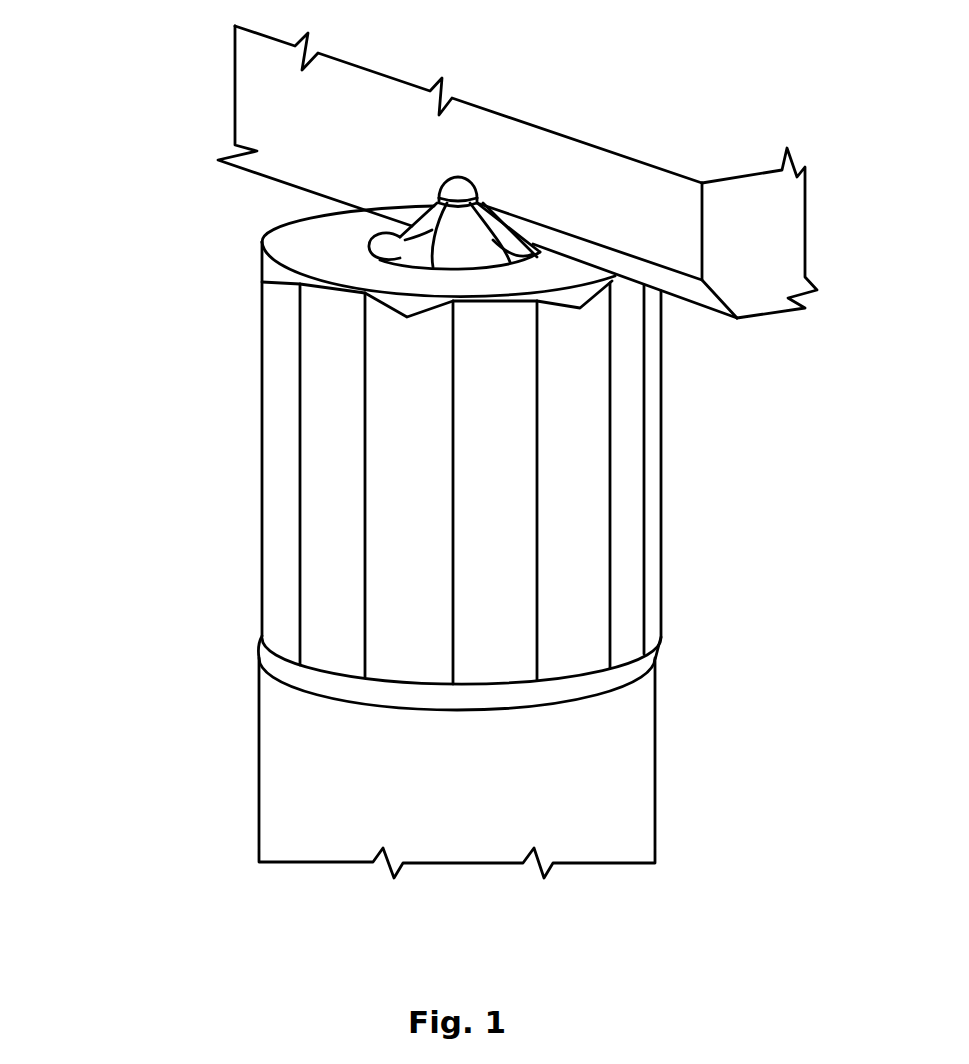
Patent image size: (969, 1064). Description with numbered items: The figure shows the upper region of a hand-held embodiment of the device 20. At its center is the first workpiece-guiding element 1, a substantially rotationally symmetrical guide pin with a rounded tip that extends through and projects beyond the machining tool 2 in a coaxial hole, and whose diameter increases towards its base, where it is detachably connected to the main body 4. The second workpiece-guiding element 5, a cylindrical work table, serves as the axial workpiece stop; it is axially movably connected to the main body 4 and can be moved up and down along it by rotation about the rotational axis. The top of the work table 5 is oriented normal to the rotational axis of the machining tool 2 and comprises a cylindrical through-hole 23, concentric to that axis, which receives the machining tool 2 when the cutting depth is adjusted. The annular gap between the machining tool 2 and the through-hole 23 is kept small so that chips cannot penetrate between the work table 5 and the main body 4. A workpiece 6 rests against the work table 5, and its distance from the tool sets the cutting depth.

The first workpiece-guiding element 1 is at (458, 192).
The machining tool 2 is at (412, 240).
The through-hole 23 is at (420, 245).
The second workpiece-guiding element 5 is at (620, 549).
The main body 4 is at (295, 755).
The workpiece 6 is at (770, 238).
The device 20 is at (170, 508).